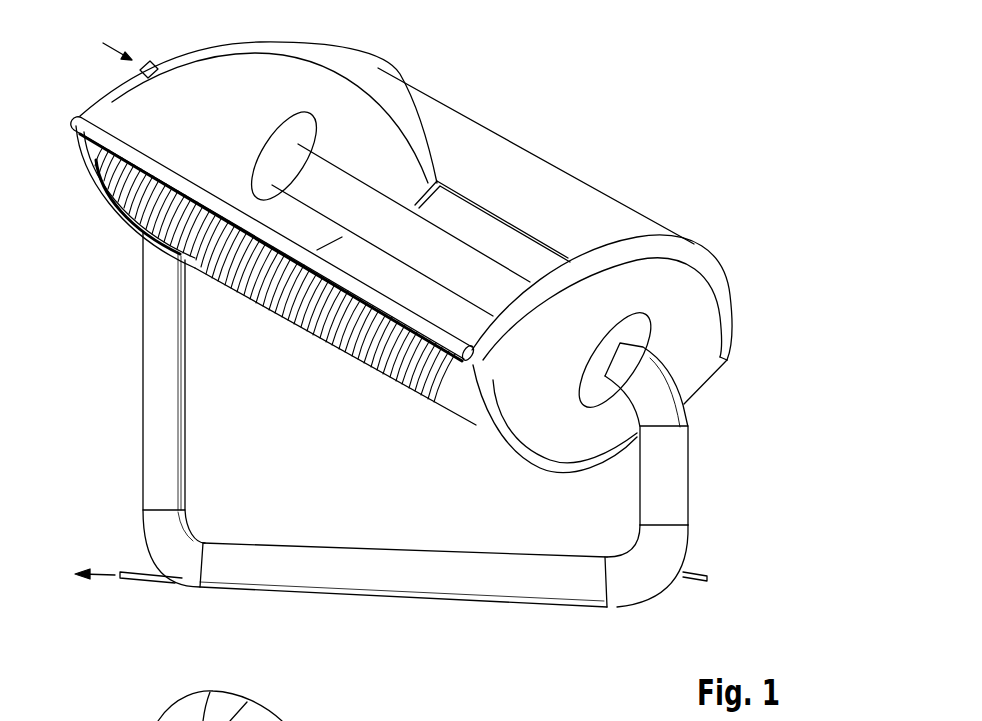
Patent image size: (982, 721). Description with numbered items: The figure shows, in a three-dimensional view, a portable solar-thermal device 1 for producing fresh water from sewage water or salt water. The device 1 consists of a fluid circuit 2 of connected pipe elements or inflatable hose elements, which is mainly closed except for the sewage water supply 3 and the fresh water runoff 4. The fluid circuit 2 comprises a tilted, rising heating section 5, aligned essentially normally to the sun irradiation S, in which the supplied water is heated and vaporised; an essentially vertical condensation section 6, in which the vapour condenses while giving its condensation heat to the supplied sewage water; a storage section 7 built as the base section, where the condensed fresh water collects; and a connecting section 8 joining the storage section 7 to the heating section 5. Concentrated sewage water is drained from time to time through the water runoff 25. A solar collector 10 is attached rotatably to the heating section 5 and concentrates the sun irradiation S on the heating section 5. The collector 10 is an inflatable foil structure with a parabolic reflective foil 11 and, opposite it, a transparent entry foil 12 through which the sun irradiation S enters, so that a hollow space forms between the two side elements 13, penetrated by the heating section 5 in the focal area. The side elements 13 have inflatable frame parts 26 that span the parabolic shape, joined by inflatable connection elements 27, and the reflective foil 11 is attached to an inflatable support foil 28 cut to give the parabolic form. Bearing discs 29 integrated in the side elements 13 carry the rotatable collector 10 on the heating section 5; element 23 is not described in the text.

The solar-thermal device 1 is at (606, 146).
The fluid circuit 2 is at (395, 432).
The sewage water supply 3 is at (152, 63).
The fresh water runoff 4 is at (147, 580).
The heating section 5 is at (453, 257).
The condensation section 6 is at (155, 337).
The storage section 7 is at (348, 560).
The connecting section 8 is at (682, 470).
The solar collector 10 is at (738, 278).
The parabolic reflective foil 11 is at (395, 281).
The transparent entry foil 12 is at (610, 197).
The side elements 13 is at (237, 141).
The roller 23 is at (283, 717).
The water runoff 25 is at (690, 580).
The inflatable frame parts 26 is at (283, 53).
The inflatable connection elements 27 is at (320, 267).
The inflatable support foil 28 is at (385, 370).
The bearing discs 29 is at (307, 130).
The sun irradiation S is at (540, 20).